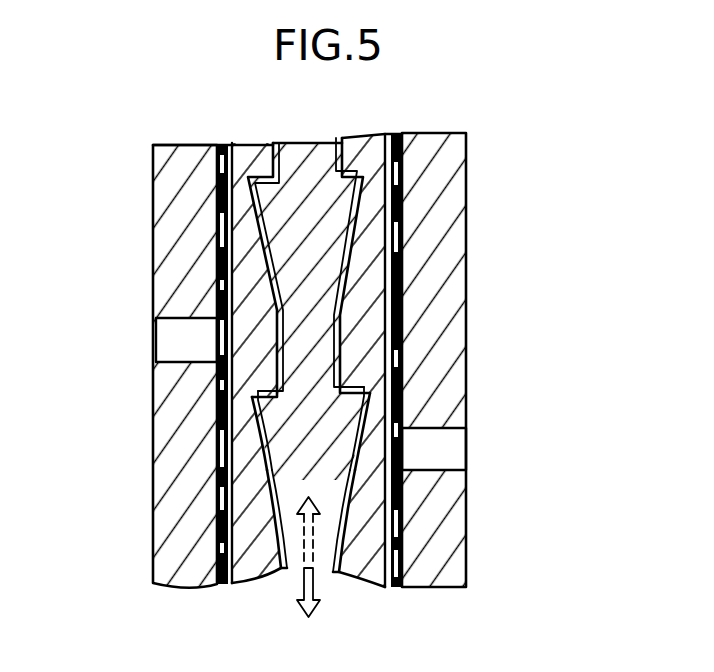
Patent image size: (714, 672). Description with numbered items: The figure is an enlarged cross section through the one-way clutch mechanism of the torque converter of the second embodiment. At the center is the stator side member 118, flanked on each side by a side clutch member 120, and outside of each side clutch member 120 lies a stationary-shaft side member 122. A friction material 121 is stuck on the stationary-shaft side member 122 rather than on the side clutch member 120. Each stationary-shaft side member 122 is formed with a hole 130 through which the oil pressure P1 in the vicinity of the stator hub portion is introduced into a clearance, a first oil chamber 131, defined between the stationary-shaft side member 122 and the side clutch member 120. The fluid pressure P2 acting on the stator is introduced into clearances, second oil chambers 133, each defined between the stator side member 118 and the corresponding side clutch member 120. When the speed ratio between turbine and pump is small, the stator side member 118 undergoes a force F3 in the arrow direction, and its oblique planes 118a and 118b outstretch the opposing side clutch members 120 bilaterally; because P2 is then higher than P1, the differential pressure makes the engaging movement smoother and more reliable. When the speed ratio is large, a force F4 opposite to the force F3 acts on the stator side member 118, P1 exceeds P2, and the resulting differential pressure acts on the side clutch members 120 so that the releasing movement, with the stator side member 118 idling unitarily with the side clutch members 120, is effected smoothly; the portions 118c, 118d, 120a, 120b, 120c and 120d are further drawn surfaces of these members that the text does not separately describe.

The stator side member 118 is at (310, 164).
The oblique plane 118a is at (345, 462).
The oblique plane 118b is at (280, 461).
The upper right leg portion of member 118 118c is at (355, 405).
The upper left leg portion of member 118 118d is at (264, 403).
The side clutch member 120 is at (258, 161).
The lower right portion of member 120 120a is at (368, 460).
The lower left portion of member 120 120b is at (252, 460).
The upper right portion of member 120 120c is at (368, 386).
The upper left portion of member 120 120d is at (265, 386).
The friction material 121 is at (220, 230).
The stationary-shaft side member 122 is at (191, 173).
The hole 130 is at (175, 343).
The clearance (first oil chamber) 131 is at (220, 300).
The clearance (second oil chamber) 133 is at (255, 237).
The oil pressure P1 is at (233, 352).
The fluid pressure P2 is at (340, 262).
The force F3 is at (300, 593).
The force F4 is at (363, 548).